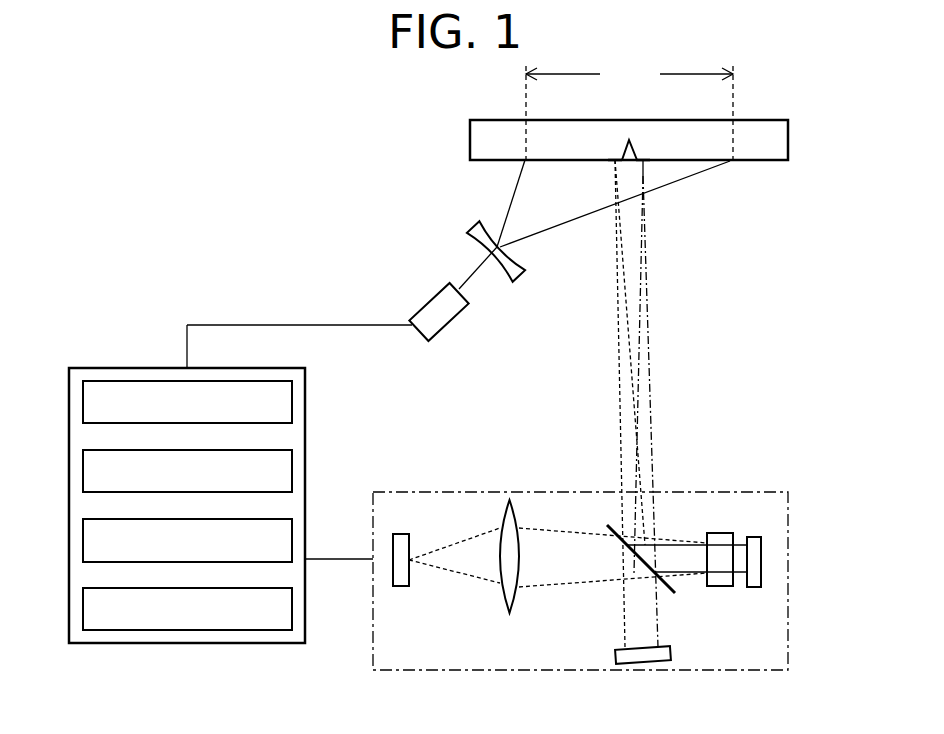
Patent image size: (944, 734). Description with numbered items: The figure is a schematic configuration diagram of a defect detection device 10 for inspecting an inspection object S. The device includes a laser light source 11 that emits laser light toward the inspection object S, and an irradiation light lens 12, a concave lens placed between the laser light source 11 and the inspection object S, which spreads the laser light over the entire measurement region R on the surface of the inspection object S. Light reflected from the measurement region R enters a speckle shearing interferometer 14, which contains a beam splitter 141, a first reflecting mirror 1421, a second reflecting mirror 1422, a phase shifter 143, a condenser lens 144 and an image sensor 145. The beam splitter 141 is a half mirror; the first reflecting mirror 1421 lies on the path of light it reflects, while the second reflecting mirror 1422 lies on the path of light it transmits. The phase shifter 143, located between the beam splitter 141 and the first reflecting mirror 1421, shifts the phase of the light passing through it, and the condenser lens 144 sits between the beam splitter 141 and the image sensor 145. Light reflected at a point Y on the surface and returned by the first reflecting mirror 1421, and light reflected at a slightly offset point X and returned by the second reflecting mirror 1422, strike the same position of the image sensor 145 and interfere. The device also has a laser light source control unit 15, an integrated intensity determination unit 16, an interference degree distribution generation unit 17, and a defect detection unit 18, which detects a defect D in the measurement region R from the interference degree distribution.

The defect detection device 10 is at (844, 631).
The laser light source 11 is at (443, 315).
The irradiation light lens 12 is at (513, 277).
The speckle shearing interferometer 14 is at (788, 492).
The laser light source control unit 15 is at (82, 381).
The integrated intensity determination unit 16 is at (82, 450).
The interference degree distribution generation unit 17 is at (82, 519).
The defect detection unit 18 is at (82, 588).
The beam splitter 141 is at (609, 527).
The phase shifter 143 is at (720, 532).
The condenser lens 144 is at (507, 520).
The image sensor 145 is at (401, 533).
The first reflecting mirror 1421 is at (762, 560).
The second reflecting mirror 1422 is at (652, 657).
The inspection object S is at (768, 140).
The measurement region R is at (629, 112).
The point X is at (615, 160).
The defect D is at (629, 141).
The point Y is at (642, 160).